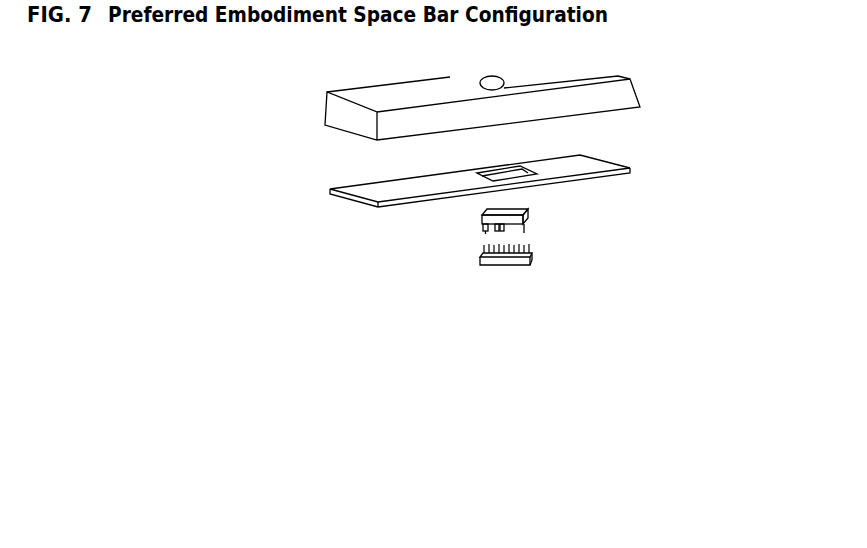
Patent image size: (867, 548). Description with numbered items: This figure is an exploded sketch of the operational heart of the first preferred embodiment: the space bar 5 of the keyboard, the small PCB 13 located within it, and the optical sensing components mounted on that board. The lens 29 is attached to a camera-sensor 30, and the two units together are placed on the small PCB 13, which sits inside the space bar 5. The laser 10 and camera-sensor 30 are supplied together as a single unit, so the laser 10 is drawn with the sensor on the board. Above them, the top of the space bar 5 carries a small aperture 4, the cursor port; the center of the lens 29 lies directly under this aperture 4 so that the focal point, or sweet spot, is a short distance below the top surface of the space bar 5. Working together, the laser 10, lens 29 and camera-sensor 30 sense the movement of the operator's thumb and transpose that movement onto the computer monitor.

The aperture 4 is at (479, 80).
The space bar 5 is at (332, 112).
The PCB 13 is at (407, 183).
The lens 29 is at (535, 222).
The camera-sensor 30 is at (485, 268).
The laser 10 is at (627, 340).